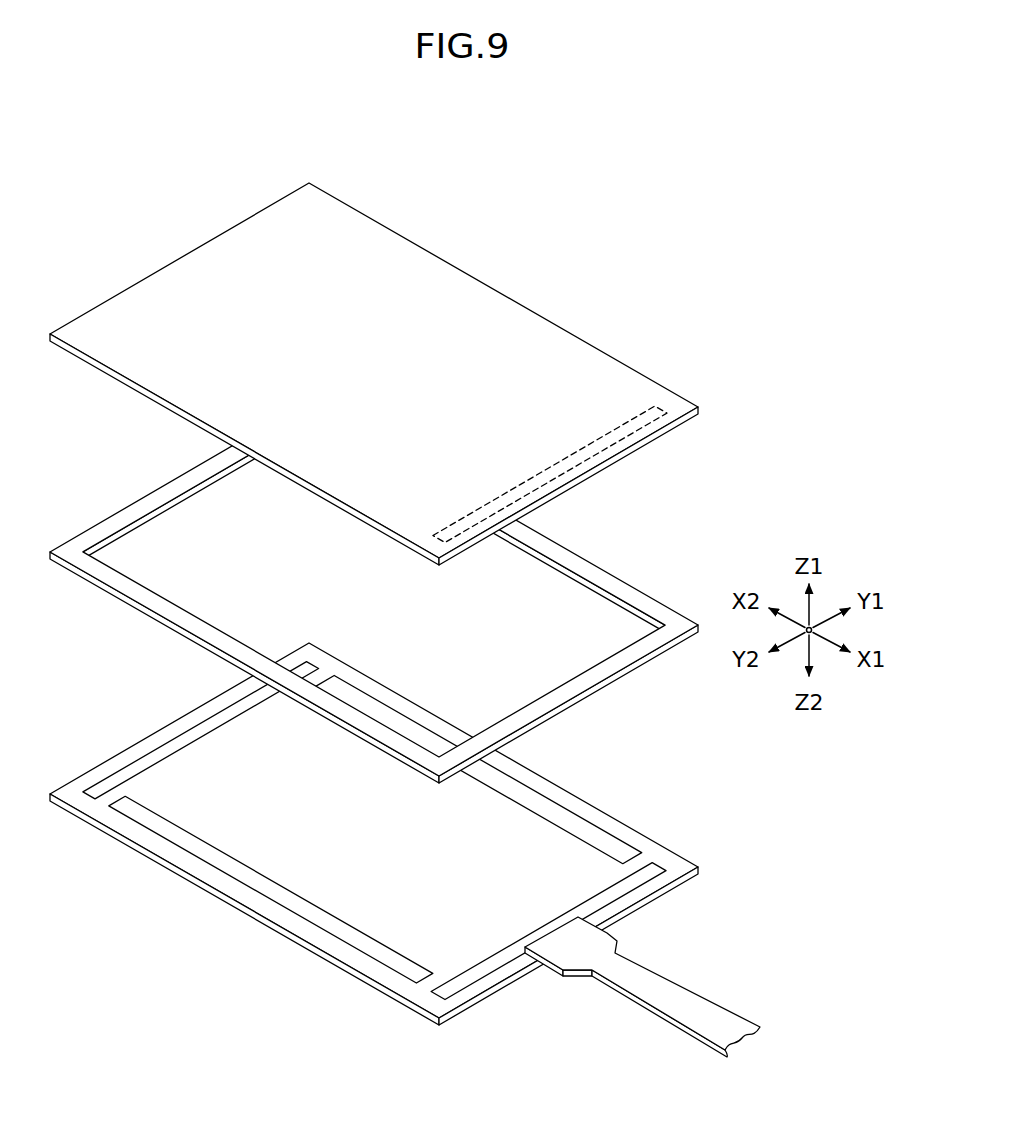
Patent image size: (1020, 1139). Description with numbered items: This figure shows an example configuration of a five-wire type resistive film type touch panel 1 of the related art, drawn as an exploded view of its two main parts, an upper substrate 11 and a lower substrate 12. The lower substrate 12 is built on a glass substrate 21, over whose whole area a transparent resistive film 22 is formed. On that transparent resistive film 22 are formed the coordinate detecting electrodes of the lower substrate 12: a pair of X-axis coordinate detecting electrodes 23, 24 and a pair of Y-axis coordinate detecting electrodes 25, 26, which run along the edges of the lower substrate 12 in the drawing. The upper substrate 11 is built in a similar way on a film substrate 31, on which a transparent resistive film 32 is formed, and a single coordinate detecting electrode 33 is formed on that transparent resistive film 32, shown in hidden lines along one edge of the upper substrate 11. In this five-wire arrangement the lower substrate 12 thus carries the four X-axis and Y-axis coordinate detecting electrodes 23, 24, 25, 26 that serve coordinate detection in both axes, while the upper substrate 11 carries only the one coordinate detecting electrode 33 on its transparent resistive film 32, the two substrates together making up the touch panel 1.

The five-wire type resistive film type touch panel 1 is at (68, 183).
The upper substrate 11 is at (413, 482).
The lower substrate 12 is at (410, 851).
The glass substrate 21 is at (412, 1006).
The transparent resistive film 22 is at (552, 846).
The X-axis coordinate detecting electrode 23 is at (128, 758).
The X-axis coordinate detecting electrode 24 is at (625, 893).
The Y-axis coordinate detecting electrode 25 is at (233, 882).
The Y-axis coordinate detecting electrode 26 is at (563, 788).
The film substrate 31 is at (345, 222).
The transparent resistive film 32 is at (664, 443).
The coordinate detecting electrode 33 is at (630, 443).